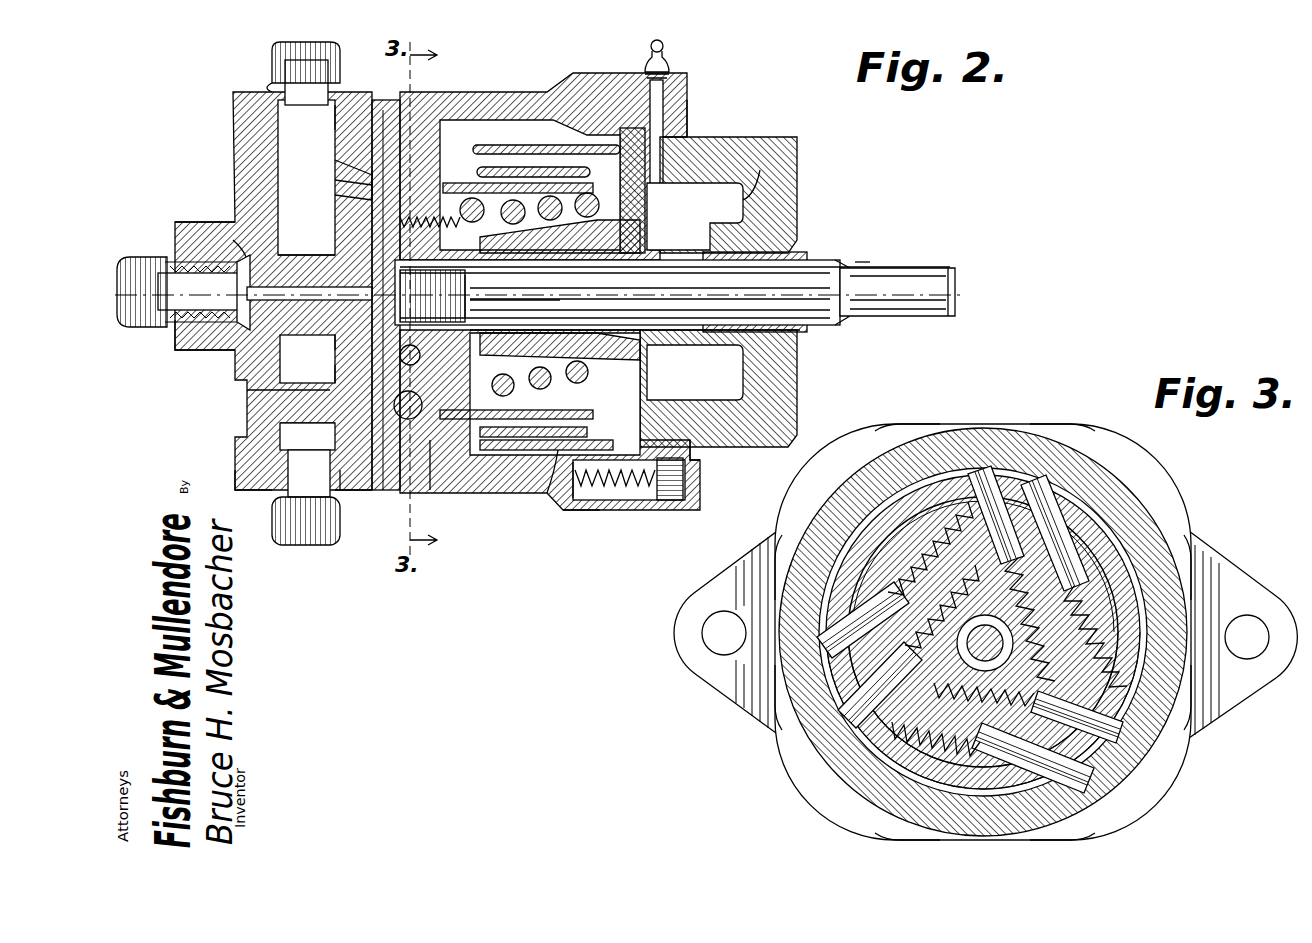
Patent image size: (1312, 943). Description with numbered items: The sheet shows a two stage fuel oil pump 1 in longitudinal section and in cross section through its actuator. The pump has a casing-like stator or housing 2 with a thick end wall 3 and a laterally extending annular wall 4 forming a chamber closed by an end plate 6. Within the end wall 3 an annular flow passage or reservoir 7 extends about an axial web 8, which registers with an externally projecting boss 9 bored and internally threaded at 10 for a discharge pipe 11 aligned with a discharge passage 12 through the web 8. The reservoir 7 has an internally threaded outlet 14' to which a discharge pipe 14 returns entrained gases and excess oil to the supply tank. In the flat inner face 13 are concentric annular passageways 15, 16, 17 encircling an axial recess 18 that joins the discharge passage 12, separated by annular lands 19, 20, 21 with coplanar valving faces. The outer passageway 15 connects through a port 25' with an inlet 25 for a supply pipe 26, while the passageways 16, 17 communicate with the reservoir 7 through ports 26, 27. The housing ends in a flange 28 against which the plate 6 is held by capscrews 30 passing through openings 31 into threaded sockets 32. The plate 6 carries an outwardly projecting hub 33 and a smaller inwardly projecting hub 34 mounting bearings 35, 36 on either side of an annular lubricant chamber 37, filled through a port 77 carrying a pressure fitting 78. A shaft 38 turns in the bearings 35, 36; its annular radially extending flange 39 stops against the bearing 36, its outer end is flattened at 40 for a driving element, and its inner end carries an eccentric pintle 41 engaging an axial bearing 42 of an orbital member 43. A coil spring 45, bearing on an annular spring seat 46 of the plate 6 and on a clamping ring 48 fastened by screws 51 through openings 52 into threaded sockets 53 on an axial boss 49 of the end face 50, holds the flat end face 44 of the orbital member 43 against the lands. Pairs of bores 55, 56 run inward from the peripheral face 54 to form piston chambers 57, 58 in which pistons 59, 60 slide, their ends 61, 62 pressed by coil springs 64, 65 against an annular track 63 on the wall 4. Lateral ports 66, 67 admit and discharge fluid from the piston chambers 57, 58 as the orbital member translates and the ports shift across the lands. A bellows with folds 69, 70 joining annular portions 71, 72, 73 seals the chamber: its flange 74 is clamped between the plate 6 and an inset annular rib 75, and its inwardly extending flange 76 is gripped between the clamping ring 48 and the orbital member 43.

In FIG. 3, the pump 1 is at (1082, 838).
In FIG. 2, the casing-like stator or housing 2 is at (236, 488).
In FIG. 2, the end wall 3 is at (242, 130).
In FIG. 3, the annular wall 4 is at (885, 470).
In FIG. 3, the end plate 6 is at (1210, 578).
In FIG. 2, the annular flow passage or reservoir 7 is at (180, 345).
In FIG. 2, the axial web 8 is at (298, 245).
In FIG. 2, the externally projecting boss 9 is at (192, 235).
In FIG. 2, the internally threaded bore 10 is at (182, 262).
In FIG. 2, the discharge pipe 11 is at (136, 257).
In FIG. 2, the discharge passage 12 is at (250, 258).
In FIG. 2, the flat inner face 13 is at (388, 125).
In FIG. 2, the discharge pipe 14 is at (281, 71).
In FIG. 2, the internally threaded outlet 14' is at (243, 75).
In FIG. 2, the outer annular passageway 15 is at (345, 485).
In FIG. 2, the annular passageway 16 is at (247, 390).
In FIG. 2, the annular passageway 17 is at (340, 358).
In FIG. 2, the axial recess 18 is at (320, 230).
In FIG. 2, the annular land 19 is at (340, 162).
In FIG. 2, the annular land 20 is at (345, 197).
In FIG. 2, the annular land 21 is at (345, 344).
In FIG. 2, the inlet 25 is at (274, 409).
In FIG. 2, the port 25' is at (289, 497).
In FIG. 2, the port 26 is at (346, 372).
In FIG. 2, the port 27 is at (345, 182).
In FIG. 2, the flange 28 is at (590, 118).
In FIG. 2, the capscrews 30 is at (685, 485).
In FIG. 2, the openings 31 is at (692, 500).
In FIG. 2, the threaded sockets 32 is at (597, 500).
In FIG. 2, the outwardly projecting hub 33 is at (797, 168).
In FIG. 2, the inwardly projecting hub 34 is at (735, 195).
In FIG. 2, the bearing 35 is at (790, 240).
In FIG. 2, the bearing 36 is at (615, 310).
In FIG. 2, the annular lubricant chamber 37 is at (760, 168).
In FIG. 2, the shaft 38 is at (895, 272).
In FIG. 2, the annular radially extending flange 39 is at (560, 300).
In FIG. 2, the flattened side 40 is at (865, 264).
In FIG. 2, the pintle 41 is at (500, 305).
In FIG. 3, the pintle 41 is at (862, 770).
In FIG. 2, the axial bearing 42 is at (465, 290).
In FIG. 3, the axial bearing 42 is at (842, 752).
In FIG. 2, the orbital member 43 is at (462, 215).
In FIG. 2, the flat end face 44 is at (307, 436).
In FIG. 2, the coil spring 45 is at (643, 347).
In FIG. 2, the annular spring seat 46 is at (688, 135).
In FIG. 2, the clamping ring 48 is at (475, 185).
In FIG. 2, the axial boss 49 is at (495, 450).
In FIG. 2, the end face 50 is at (435, 212).
In FIG. 2, the screws 51 is at (490, 172).
In FIG. 3, the screws 51 is at (822, 735).
In FIG. 2, the openings 52 is at (485, 150).
In FIG. 2, the threaded sockets 53 is at (352, 183).
In FIG. 2, the peripheral face 54 is at (435, 492).
In FIG. 3, the bores 55 is at (1085, 500).
In FIG. 2, the bores 56 is at (482, 360).
In FIG. 3, the bores 56 is at (1010, 480).
In FIG. 3, the piston chamber 57 is at (1175, 545).
In FIG. 2, the piston chamber 58 is at (352, 492).
In FIG. 3, the piston chamber 58 is at (1080, 700).
In FIG. 2, the pistons 59 is at (410, 367).
In FIG. 3, the pistons 59 is at (1070, 475).
In FIG. 2, the pistons 60 is at (395, 125).
In FIG. 3, the pistons 60 is at (985, 475).
In FIG. 3, the piston end 61 is at (740, 688).
In FIG. 3, the piston end 62 is at (790, 722).
In FIG. 2, the annular track 63 is at (415, 130).
In FIG. 3, the annular track 63 is at (805, 545).
In FIG. 3, the coil spring 64 is at (868, 492).
In FIG. 2, the coil spring 65 is at (418, 418).
In FIG. 3, the coil spring 65 is at (845, 535).
In FIG. 3, the lateral port 66 is at (885, 828).
In FIG. 3, the lateral port 67 is at (1118, 778).
In FIG. 2, the fold 69 is at (540, 392).
In FIG. 2, the fold 70 is at (695, 450).
In FIG. 2, the outer annular portion 71 is at (555, 494).
In FIG. 2, the annular portion 72 is at (578, 510).
In FIG. 2, the inner annular portion 73 is at (645, 372).
In FIG. 2, the flange 74 is at (625, 500).
In FIG. 2, the inset annular rib 75 is at (625, 140).
In FIG. 2, the inwardly extending flange 76 is at (500, 198).
In FIG. 2, the port 77 is at (680, 85).
In FIG. 2, the pressure fitting 78 is at (664, 46).